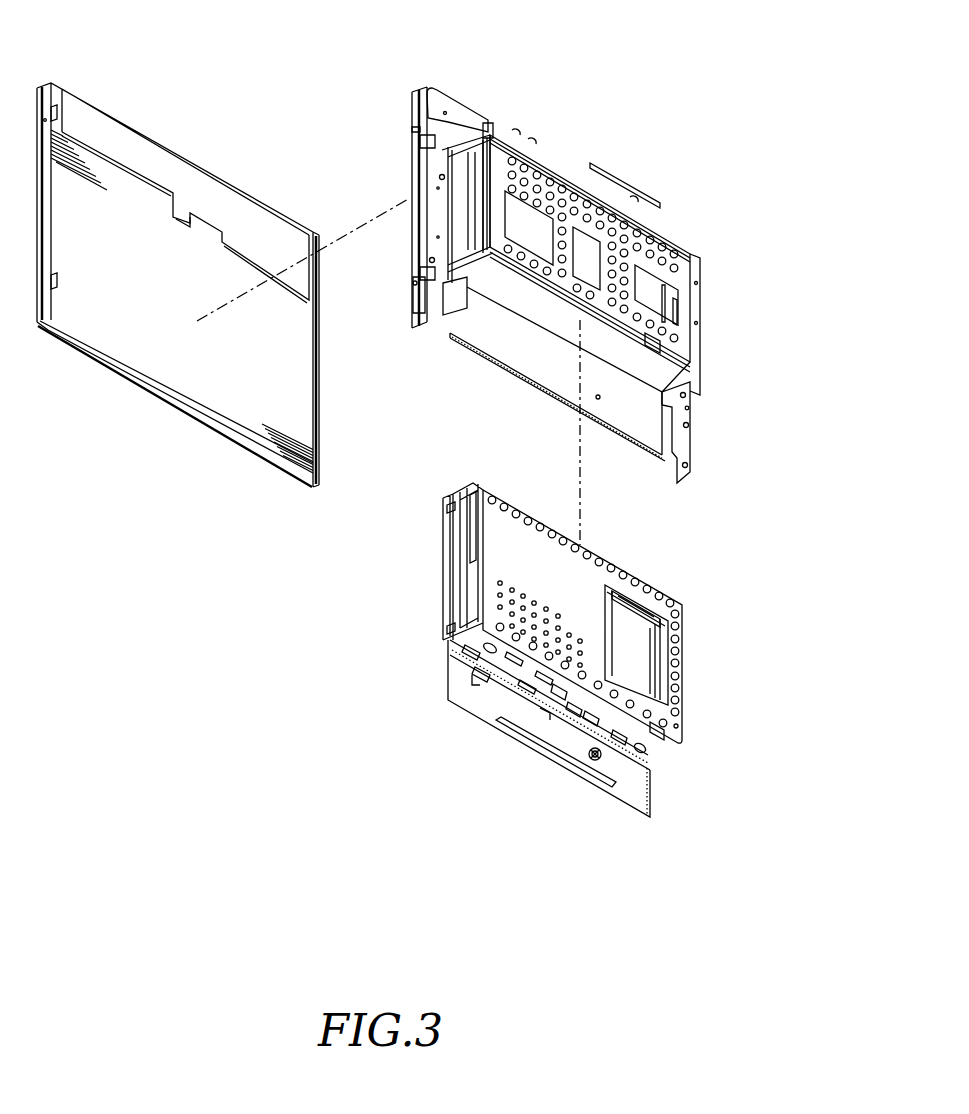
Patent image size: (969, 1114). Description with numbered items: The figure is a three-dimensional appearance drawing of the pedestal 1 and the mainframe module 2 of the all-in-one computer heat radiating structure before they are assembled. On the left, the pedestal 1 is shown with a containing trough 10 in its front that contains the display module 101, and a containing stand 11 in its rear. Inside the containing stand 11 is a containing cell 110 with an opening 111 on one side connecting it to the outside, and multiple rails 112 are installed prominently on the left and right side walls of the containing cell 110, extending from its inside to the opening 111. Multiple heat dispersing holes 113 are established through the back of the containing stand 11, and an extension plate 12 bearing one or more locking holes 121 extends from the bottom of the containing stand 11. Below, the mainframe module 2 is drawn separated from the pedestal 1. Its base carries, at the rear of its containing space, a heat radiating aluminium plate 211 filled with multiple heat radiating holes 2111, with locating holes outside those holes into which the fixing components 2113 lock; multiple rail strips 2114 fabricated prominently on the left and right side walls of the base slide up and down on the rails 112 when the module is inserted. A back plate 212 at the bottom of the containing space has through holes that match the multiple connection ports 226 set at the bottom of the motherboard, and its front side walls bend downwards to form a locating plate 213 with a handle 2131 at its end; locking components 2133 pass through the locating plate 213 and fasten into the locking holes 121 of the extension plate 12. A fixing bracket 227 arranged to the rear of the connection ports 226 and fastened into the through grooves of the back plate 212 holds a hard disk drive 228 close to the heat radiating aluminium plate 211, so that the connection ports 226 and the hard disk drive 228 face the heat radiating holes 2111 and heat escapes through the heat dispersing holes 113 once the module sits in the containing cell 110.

The pedestal 1 is at (440, 103).
The containing trough 10 is at (425, 325).
The display module 101 is at (118, 352).
The containing stand 11 is at (577, 180).
The containing cell 110 is at (672, 369).
The opening 111 is at (653, 336).
The rails 112 is at (487, 132).
The heat dispersing holes 113 is at (597, 213).
The extension plate 12 is at (490, 335).
The locking holes 121 is at (598, 399).
The mainframe module 2 is at (432, 540).
The heat radiating aluminium plate 211 is at (580, 582).
The heat radiating holes 2111 is at (660, 733).
The fixing components 2113 is at (678, 726).
The rail strips 2114 is at (465, 543).
The back plate 212 is at (515, 705).
The locating plate 213 is at (627, 787).
The handle 2131 is at (530, 743).
The locking components 2133 is at (593, 757).
The connection ports 226 is at (480, 673).
The fixing bracket 227 is at (668, 645).
The hard disk drive 228 is at (652, 652).